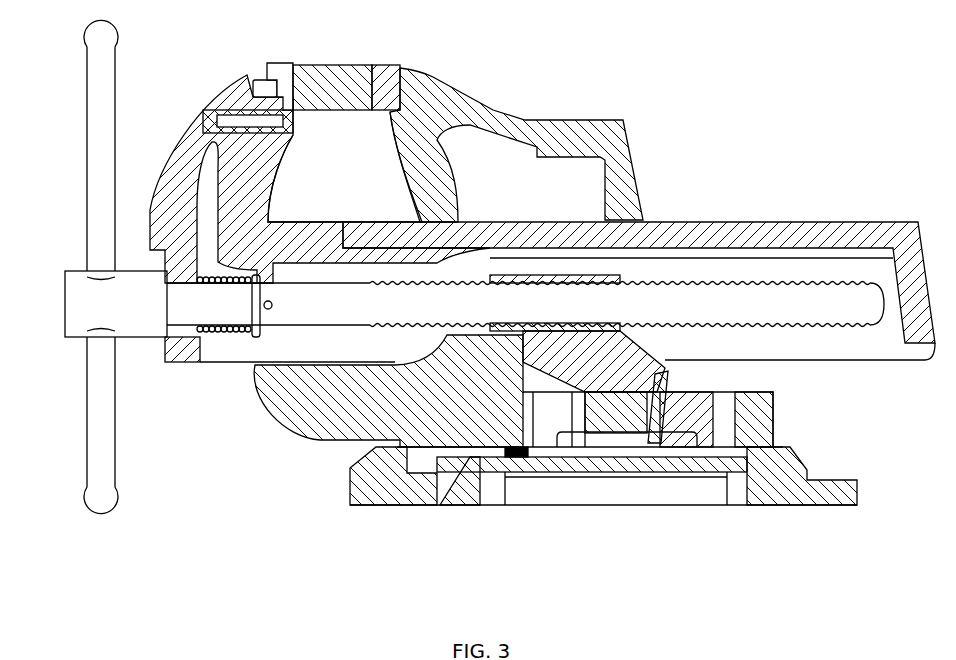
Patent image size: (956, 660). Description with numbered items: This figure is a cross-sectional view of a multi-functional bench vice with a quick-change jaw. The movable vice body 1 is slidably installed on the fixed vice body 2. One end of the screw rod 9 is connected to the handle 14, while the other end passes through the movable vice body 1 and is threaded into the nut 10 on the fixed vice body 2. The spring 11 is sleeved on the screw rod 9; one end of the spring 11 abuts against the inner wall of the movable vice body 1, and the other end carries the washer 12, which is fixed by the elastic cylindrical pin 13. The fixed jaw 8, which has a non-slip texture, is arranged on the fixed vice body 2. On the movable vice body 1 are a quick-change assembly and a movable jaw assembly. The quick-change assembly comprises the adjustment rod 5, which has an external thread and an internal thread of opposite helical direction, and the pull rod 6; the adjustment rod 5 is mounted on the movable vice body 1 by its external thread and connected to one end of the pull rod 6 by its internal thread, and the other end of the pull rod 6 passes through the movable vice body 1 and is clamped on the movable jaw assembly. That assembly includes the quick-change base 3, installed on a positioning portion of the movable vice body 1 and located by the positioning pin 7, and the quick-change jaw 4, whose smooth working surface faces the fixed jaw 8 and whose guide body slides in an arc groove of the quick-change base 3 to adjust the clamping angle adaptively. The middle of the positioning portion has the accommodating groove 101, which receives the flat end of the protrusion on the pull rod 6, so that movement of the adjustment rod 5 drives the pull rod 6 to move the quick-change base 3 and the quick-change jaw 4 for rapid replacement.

The movable vice body 1 is at (176, 168).
The fixed vice body 2 is at (568, 124).
The quick-change base 3 is at (279, 62).
The quick-change jaw 4 is at (338, 72).
The adjustment rod 5 is at (202, 108).
The pull rod 6 is at (292, 135).
The positioning pin 7 is at (258, 80).
The fixed jaw 8 is at (394, 70).
The screw rod 9 is at (675, 296).
The nut 10 is at (662, 366).
The spring 11 is at (224, 336).
The washer 12 is at (257, 340).
The elastic cylindrical pin 13 is at (272, 308).
The handle 14 is at (93, 403).
The accommodating groove 101 is at (808, 232).